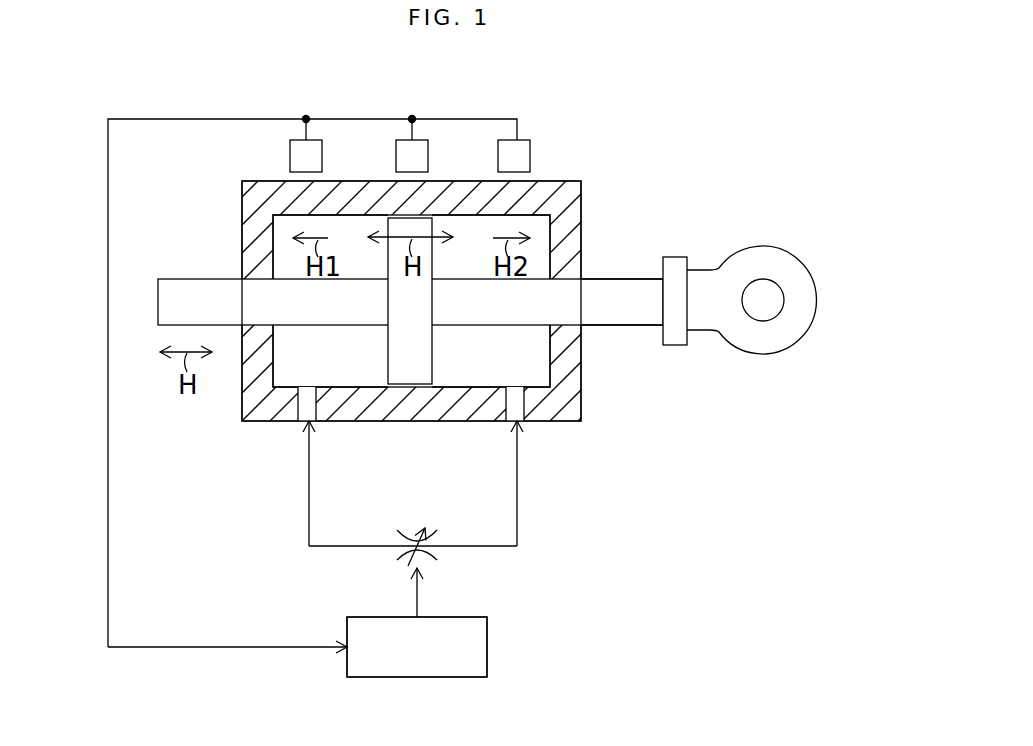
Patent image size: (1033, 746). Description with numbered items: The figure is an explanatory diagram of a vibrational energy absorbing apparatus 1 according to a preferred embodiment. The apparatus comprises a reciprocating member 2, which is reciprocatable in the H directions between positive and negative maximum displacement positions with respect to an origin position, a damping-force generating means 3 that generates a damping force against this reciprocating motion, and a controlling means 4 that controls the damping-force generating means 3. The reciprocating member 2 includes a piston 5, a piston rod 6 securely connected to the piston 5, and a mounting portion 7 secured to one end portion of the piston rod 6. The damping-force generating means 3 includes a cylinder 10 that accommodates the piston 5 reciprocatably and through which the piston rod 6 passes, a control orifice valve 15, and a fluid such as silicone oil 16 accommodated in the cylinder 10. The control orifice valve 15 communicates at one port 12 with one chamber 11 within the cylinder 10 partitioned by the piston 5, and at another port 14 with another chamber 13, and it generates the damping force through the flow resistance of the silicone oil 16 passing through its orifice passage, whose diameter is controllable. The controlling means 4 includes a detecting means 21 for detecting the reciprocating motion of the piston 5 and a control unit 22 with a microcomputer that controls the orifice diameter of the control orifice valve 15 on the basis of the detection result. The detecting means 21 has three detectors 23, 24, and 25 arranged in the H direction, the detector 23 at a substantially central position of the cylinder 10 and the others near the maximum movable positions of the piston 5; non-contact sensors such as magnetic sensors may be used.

The vibrational energy absorbing apparatus 1 is at (607, 222).
The reciprocating member 2 is at (215, 276).
The damping-force generating means 3 is at (545, 463).
The controlling means 4 is at (338, 672).
The piston 5 is at (405, 372).
The piston rod 6 is at (618, 305).
The mounting portion 7 is at (748, 262).
The cylinder 10 is at (573, 183).
The one chamber 11 is at (295, 353).
The port 12 is at (368, 545).
The another chamber 13 is at (530, 362).
The port 14 is at (465, 545).
The control orifice valve 15 is at (408, 550).
The silicone oil 16 is at (353, 362).
The detecting means 21 is at (534, 121).
The control unit 22 is at (420, 660).
The detector 23 is at (425, 153).
The detector 24 is at (300, 153).
The detector 25 is at (527, 153).